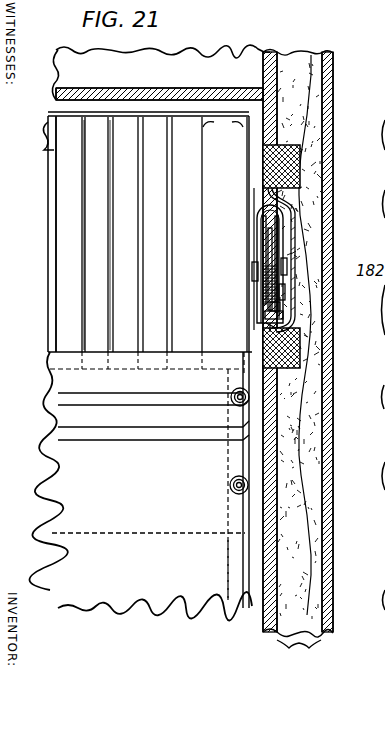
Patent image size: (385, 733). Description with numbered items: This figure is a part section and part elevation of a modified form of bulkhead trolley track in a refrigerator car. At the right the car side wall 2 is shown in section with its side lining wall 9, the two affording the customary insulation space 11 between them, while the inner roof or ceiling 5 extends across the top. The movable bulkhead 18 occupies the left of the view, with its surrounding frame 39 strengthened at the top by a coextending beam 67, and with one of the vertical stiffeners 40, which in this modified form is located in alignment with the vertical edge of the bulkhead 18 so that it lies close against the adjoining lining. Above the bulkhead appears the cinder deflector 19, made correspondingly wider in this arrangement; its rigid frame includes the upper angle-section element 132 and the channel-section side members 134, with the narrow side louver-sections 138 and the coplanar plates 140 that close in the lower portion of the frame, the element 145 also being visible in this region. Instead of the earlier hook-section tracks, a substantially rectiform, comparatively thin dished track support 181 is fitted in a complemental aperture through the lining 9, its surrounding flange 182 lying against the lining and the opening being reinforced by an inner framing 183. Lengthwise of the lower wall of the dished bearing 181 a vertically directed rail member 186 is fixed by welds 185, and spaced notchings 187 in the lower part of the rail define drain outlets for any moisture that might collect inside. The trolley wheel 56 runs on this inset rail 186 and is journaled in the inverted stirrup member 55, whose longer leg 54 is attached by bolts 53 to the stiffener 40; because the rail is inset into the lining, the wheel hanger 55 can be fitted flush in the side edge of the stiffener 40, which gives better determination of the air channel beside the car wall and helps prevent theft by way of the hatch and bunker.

The side wall 2 is at (334, 565).
The inner roof or ceiling 5 is at (157, 89).
The side lining wall 9 is at (262, 618).
The insulation space 11 is at (299, 654).
The bulkhead 18 is at (140, 366).
The cinder deflector 19 is at (56, 224).
The surrounding frame 39 is at (62, 434).
The vertical stiffener 40 is at (228, 566).
The bolts 53 is at (229, 486).
The longer leg of stirrup member 54 is at (257, 285).
The inverted stirrup member 55 is at (257, 226).
The trolley wheel 56 is at (268, 248).
The coextending beam 67 is at (66, 406).
The upper angle-section element 132 is at (47, 151).
The side member 134 is at (223, 134).
The side louver-section 138 is at (44, 255).
The coplanar plate 140 is at (56, 385).
The ribs 145 is at (97, 193).
The dished track support 181 is at (296, 232).
The surrounding flange 182 is at (260, 362).
The inner framing 183 is at (341, 354).
The welds 185 is at (270, 332).
The rail member 186 is at (265, 310).
The notchings 187 is at (265, 324).